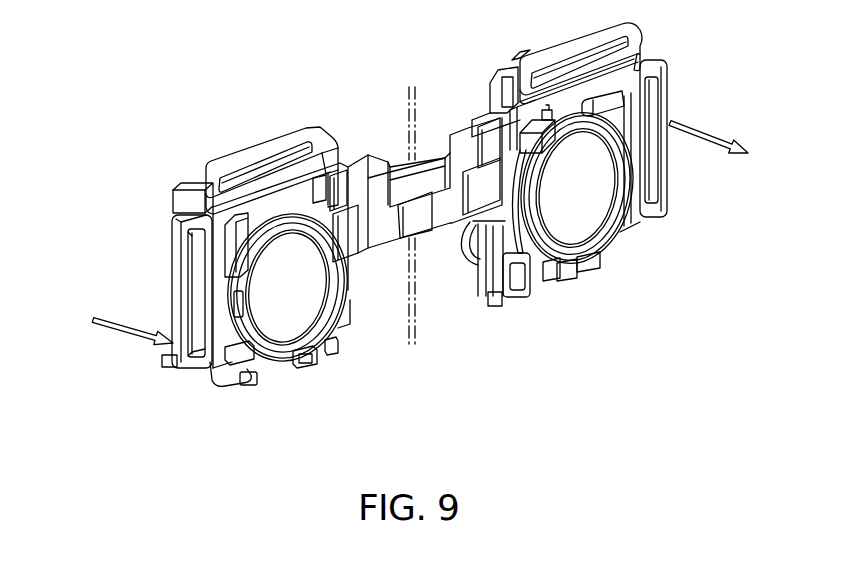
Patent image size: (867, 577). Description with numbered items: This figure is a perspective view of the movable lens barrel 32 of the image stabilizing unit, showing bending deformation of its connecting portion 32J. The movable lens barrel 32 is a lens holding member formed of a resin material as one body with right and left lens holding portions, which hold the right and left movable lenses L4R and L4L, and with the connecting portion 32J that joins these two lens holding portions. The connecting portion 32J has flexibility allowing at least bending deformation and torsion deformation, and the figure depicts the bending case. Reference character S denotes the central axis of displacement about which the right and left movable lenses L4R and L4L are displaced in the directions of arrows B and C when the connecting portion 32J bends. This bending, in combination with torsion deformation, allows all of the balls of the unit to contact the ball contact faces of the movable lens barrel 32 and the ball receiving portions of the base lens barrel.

The movable lens barrel 32 is at (472, 120).
The connecting portion 32J is at (407, 165).
The central axis of displacement S is at (418, 313).
The left movable lens L4L is at (315, 333).
The right movable lens L4R is at (585, 247).
The arrow B is at (132, 343).
The arrow C is at (708, 123).